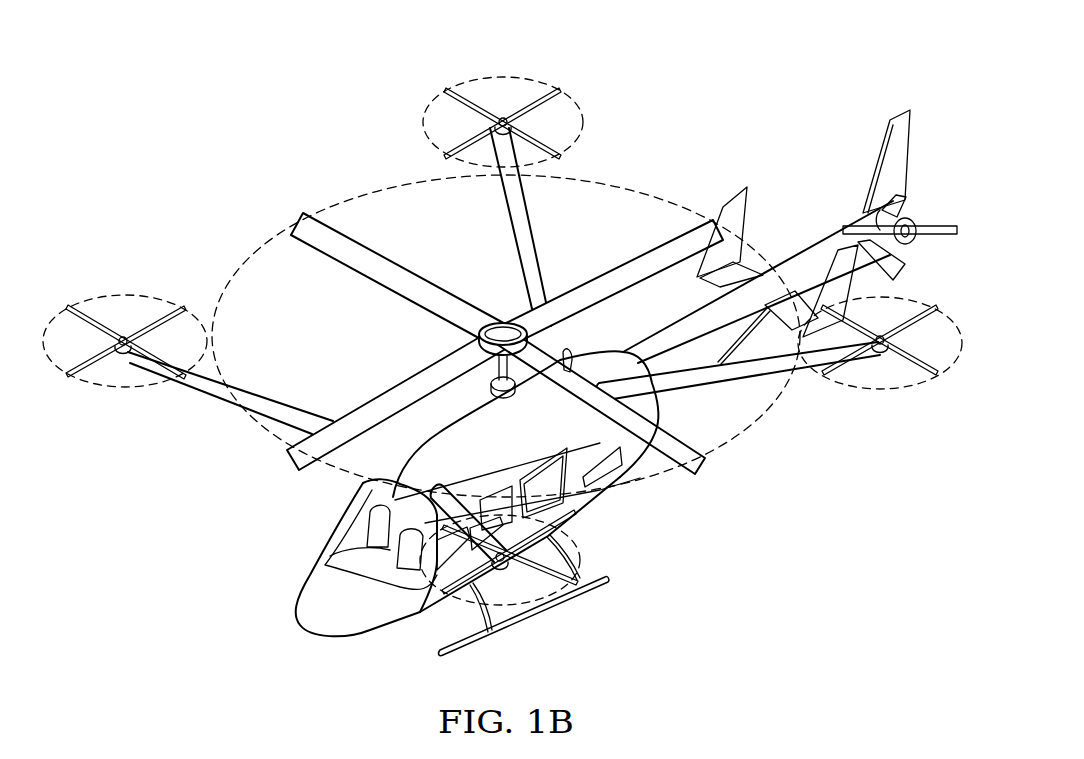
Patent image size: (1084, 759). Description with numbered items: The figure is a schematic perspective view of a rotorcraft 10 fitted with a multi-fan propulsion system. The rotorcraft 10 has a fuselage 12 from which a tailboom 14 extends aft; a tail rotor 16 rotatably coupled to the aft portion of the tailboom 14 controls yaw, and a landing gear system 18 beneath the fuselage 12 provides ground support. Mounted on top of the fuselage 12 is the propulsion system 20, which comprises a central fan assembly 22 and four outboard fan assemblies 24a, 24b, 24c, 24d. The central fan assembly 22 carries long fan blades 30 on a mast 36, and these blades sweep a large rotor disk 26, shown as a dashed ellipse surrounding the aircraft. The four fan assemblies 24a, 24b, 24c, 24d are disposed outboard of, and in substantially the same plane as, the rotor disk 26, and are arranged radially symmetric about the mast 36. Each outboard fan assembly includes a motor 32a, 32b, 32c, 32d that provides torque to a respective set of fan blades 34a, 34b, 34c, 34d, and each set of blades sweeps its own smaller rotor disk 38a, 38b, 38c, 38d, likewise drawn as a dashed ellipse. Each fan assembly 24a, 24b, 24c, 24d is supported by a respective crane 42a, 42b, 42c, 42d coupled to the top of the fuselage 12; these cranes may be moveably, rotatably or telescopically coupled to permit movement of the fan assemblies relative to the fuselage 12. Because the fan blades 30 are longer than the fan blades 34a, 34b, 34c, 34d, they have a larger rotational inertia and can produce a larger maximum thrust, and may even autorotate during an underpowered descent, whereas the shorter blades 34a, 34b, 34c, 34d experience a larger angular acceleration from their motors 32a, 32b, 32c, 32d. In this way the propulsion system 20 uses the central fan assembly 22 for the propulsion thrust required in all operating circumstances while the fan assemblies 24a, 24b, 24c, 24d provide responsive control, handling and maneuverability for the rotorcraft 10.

The rotorcraft 10 is at (225, 110).
The fuselage 12 is at (298, 597).
The tailboom 14 is at (800, 255).
The tail rotor 16 is at (922, 228).
The landing gear system 18 is at (440, 653).
The propulsion system 20 is at (228, 254).
The central fan assembly 22 is at (494, 314).
The fan assembly 24a is at (532, 590).
The fan assembly 24b is at (906, 380).
The fan assembly 24c is at (522, 90).
The fan assembly 24d is at (104, 300).
The rotor disk 26 is at (668, 488).
The fan blades 30 is at (366, 248).
The motor 32a is at (503, 572).
The motor 32b is at (878, 360).
The motor 32c is at (545, 137).
The motor 32d is at (124, 368).
The fan blades 34a is at (600, 575).
The fan blades 34b is at (905, 300).
The fan blades 34c is at (472, 96).
The fan blades 34d is at (86, 392).
The mast 36 is at (478, 356).
The rotor disk 38a is at (586, 547).
The rotor disk 38b is at (840, 404).
The rotor disk 38c is at (423, 110).
The rotor disk 38d is at (140, 295).
The crane 42a is at (470, 482).
The crane 42b is at (690, 395).
The crane 42c is at (538, 235).
The crane 42d is at (288, 400).